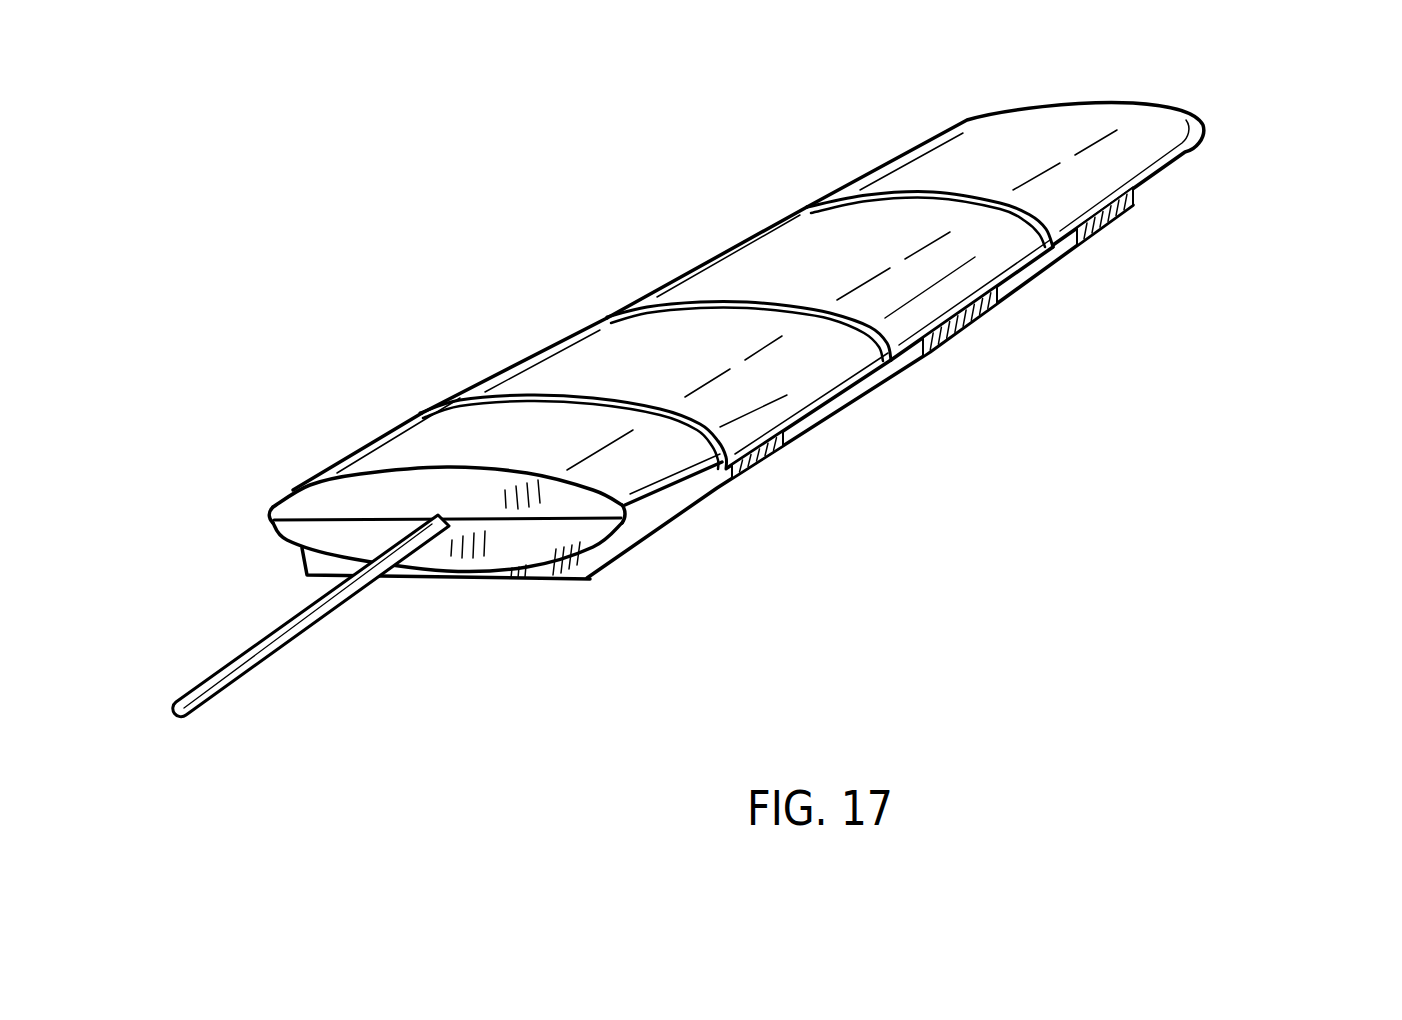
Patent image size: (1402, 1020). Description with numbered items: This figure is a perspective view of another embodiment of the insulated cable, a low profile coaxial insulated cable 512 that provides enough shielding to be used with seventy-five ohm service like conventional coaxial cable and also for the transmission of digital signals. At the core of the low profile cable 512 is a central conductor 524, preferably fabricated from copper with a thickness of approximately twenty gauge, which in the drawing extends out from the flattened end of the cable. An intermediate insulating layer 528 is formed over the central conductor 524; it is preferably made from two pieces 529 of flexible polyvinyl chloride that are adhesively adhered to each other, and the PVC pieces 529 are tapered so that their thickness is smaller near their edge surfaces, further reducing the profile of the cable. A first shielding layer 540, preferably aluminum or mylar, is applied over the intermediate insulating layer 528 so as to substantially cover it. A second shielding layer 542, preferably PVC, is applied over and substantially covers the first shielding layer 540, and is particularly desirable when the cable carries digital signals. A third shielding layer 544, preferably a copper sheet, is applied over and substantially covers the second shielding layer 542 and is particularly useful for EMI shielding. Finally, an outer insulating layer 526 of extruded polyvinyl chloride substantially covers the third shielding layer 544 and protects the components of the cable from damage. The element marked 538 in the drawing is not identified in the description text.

The low profile coaxial insulated cable 512 is at (734, 453).
The central conductor 524 is at (262, 674).
The outer insulating layer 526 is at (1142, 175).
The intermediate insulating layer 528 is at (394, 531).
The PVC pieces 529 is at (530, 547).
The base strip 538 is at (680, 505).
The first shielding layer 540 is at (402, 421).
The second shielding layer 542 is at (788, 414).
The third shielding layer 544 is at (962, 298).